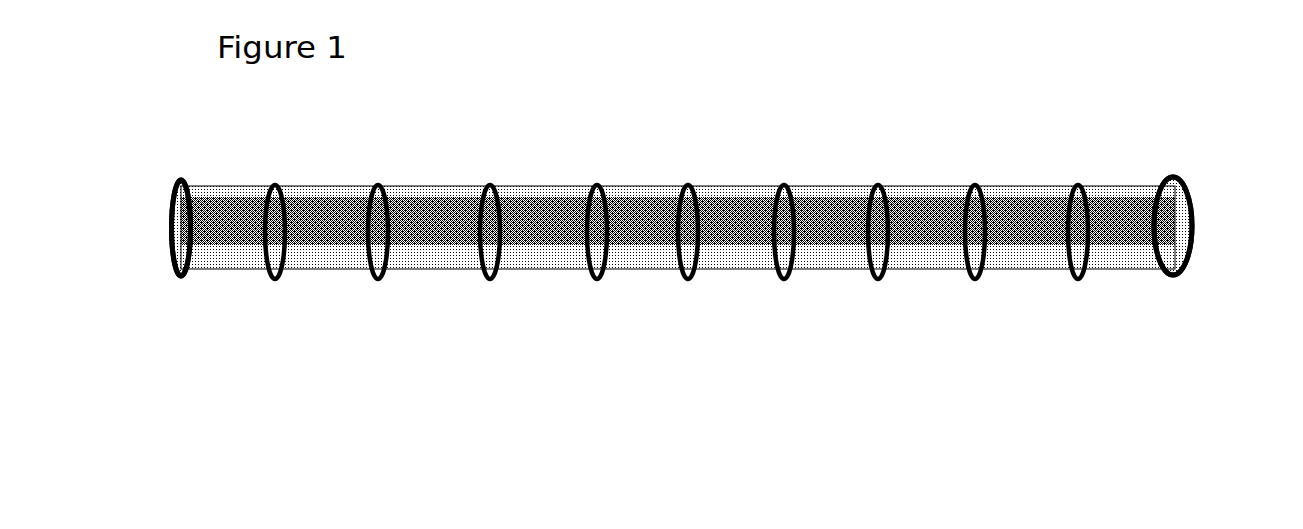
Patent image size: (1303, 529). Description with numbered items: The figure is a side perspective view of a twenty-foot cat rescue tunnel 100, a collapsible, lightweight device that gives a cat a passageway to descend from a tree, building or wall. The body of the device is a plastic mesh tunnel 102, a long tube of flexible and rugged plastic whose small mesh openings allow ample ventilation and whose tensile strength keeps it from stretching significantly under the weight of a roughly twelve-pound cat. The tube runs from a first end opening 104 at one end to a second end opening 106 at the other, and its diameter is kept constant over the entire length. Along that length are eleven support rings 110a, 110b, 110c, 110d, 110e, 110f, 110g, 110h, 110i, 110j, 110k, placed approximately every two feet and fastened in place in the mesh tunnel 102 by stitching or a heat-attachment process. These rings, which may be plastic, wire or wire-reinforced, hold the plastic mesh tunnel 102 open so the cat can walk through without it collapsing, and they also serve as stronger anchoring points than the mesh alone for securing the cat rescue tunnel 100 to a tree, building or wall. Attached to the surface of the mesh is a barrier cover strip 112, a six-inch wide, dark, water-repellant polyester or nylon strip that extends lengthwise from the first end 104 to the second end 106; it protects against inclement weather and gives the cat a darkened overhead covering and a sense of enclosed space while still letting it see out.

The cat rescue tunnel 100 is at (700, 152).
The plastic mesh tunnel 102 is at (922, 187).
The first end opening 104 is at (172, 195).
The second end opening 106 is at (1187, 178).
The barrier cover strip 112 is at (318, 215).
The support ring 110a is at (175, 288).
The support ring 110b is at (263, 283).
The support ring 110c is at (367, 283).
The support ring 110d is at (480, 282).
The support ring 110e is at (582, 283).
The support ring 110f is at (673, 283).
The support ring 110g is at (773, 282).
The support ring 110h is at (868, 282).
The support ring 110i is at (962, 278).
The support ring 110j is at (1058, 282).
The support ring 110k is at (1157, 282).